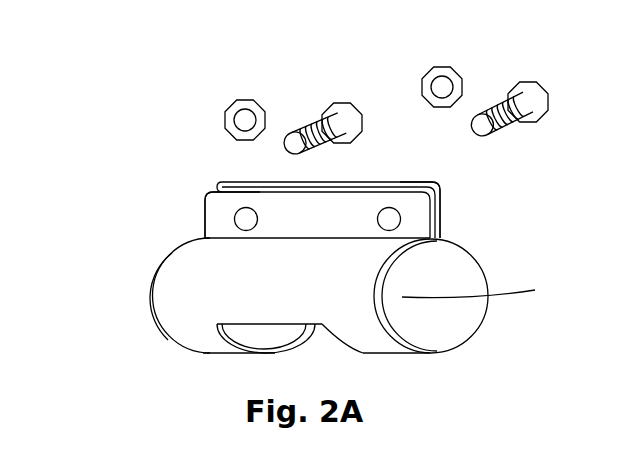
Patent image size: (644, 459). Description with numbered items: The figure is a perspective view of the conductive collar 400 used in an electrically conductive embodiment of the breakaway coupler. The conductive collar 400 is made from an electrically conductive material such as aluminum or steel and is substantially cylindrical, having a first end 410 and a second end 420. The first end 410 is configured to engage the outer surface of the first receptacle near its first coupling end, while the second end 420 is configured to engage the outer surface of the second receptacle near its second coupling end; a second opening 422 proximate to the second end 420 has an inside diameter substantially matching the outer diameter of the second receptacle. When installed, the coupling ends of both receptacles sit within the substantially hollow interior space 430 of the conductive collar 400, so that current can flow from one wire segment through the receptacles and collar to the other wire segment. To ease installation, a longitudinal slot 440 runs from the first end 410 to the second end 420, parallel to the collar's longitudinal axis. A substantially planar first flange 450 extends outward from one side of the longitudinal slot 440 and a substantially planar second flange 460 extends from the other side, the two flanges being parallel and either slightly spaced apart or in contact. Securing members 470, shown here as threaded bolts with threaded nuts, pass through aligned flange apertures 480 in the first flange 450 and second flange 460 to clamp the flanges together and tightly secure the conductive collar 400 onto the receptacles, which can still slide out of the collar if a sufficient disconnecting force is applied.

The conductive collar 400 is at (212, 298).
The first end 410 is at (168, 255).
The second end 420 is at (473, 262).
The second opening 422 is at (463, 333).
The hollow interior space 430 is at (484, 292).
The longitudinal slot 440 is at (443, 236).
The first flange 450 is at (222, 207).
The second flange 460 is at (442, 190).
The securing member 470 is at (287, 105).
The flange aperture 480 is at (390, 214).